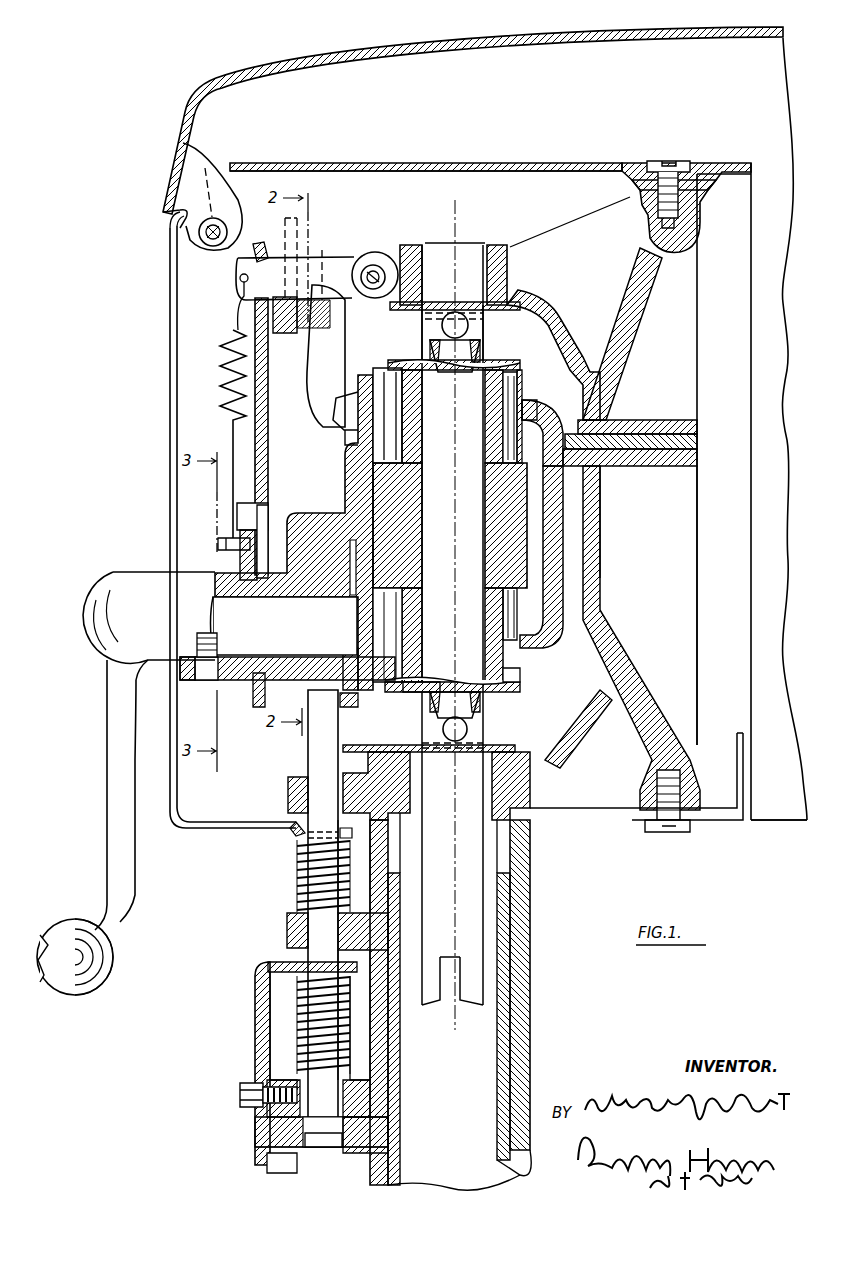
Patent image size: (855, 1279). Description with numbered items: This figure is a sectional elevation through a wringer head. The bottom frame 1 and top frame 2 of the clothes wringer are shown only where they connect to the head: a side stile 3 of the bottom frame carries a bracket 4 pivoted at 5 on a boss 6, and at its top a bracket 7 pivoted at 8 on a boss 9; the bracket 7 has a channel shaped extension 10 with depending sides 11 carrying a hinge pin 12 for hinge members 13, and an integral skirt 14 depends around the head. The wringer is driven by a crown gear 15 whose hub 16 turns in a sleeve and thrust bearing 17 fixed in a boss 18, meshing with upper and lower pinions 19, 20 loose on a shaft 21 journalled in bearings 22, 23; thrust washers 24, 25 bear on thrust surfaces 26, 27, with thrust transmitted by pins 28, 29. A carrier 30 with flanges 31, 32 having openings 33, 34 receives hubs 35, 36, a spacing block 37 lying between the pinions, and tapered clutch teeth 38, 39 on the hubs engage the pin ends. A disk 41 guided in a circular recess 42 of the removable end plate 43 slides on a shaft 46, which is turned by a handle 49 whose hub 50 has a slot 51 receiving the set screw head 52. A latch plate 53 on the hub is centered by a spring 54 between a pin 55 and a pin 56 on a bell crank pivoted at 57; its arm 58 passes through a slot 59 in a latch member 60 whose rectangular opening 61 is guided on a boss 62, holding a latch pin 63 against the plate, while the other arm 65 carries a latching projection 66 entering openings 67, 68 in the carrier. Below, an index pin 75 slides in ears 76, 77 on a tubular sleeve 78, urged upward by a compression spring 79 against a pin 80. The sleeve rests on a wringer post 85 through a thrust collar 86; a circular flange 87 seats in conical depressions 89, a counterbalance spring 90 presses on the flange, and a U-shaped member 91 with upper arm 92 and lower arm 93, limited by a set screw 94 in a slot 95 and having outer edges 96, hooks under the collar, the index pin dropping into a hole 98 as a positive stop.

The bottom frame 1 is at (790, 818).
The top frame 2 is at (520, 42).
The side stile 3 is at (755, 497).
The bracket 4 is at (724, 820).
The pivot 5 is at (654, 828).
The boss 6 is at (632, 806).
The bracket 7 is at (712, 170).
The pivot 8 is at (672, 168).
The boss 9 is at (696, 202).
The channel shaped extension 10 is at (362, 165).
The depending sides 11 is at (400, 184).
The hinge pin 12 is at (226, 224).
The hinge members 13 is at (210, 168).
The skirt 14 is at (168, 426).
The crown gear 15 is at (532, 398).
The hub 16 is at (638, 462).
The sleeve and thrust bearing 17 is at (642, 440).
The boss 18 is at (612, 433).
The upper pinion 19 is at (516, 390).
The lower pinion 20 is at (512, 632).
The shaft 21 is at (480, 333).
The upper bearing 22 is at (490, 252).
The lower bearing 23 is at (486, 816).
The thrust washer 24 is at (516, 311).
The thrust washer 25 is at (505, 746).
The thrust surface 26 is at (514, 296).
The thrust surface 27 is at (530, 786).
The pin 28 is at (470, 324).
The pin 29 is at (462, 728).
The carrier 30 is at (386, 695).
The upper flange 31 is at (516, 365).
The lower flange 32 is at (515, 690).
The opening 33 is at (508, 372).
The opening 34 is at (512, 682).
The hub 35 is at (412, 360).
The hub 36 is at (410, 700).
The spacing block 37 is at (527, 515).
The tapered clutch teeth 38 is at (436, 345).
The tapered clutch teeth 39 is at (478, 708).
The disk 41 is at (348, 605).
The circular recess 42 is at (352, 542).
The removable end plate 43 is at (345, 459).
The shaft 46 is at (300, 650).
The handle 49 is at (104, 866).
The hub 50 is at (124, 572).
The slot 51 is at (220, 676).
The set screw head 52 is at (206, 688).
The latch plate 53 is at (242, 560).
The centering spring 54 is at (222, 400).
The pin 55 is at (224, 545).
The pin 56 is at (240, 283).
The pivot 57 is at (373, 268).
The arm 58 is at (306, 300).
The slot 59 is at (256, 250).
The latch member 60 is at (268, 410).
The rectangular opening 61 is at (263, 560).
The boss 62 is at (258, 707).
The latch pin 63 is at (243, 503).
The arm 65 is at (318, 373).
The latching projection 66 is at (350, 413).
The opening 67 is at (371, 372).
The opening 68 is at (360, 442).
The index pin 75 is at (310, 754).
The ear 76 is at (288, 797).
The ear 77 is at (286, 938).
The tubular sleeve 78 is at (532, 890).
The compression spring 79 is at (300, 870).
The pin 80 is at (292, 832).
The wringer post 85 is at (400, 1090).
The thrust collar 86 is at (352, 1152).
The circular flange 87 is at (289, 1084).
The conical depressions 89 is at (266, 1150).
The counterbalance spring 90 is at (300, 1008).
The U-shaped member 91 is at (254, 1046).
The upper arm 92 is at (290, 972).
The lower arm 93 is at (268, 1164).
The set screw 94 is at (242, 1100).
The slot 95 is at (262, 1116).
The outer edges 96 is at (281, 1178).
The hole 98 is at (315, 1152).